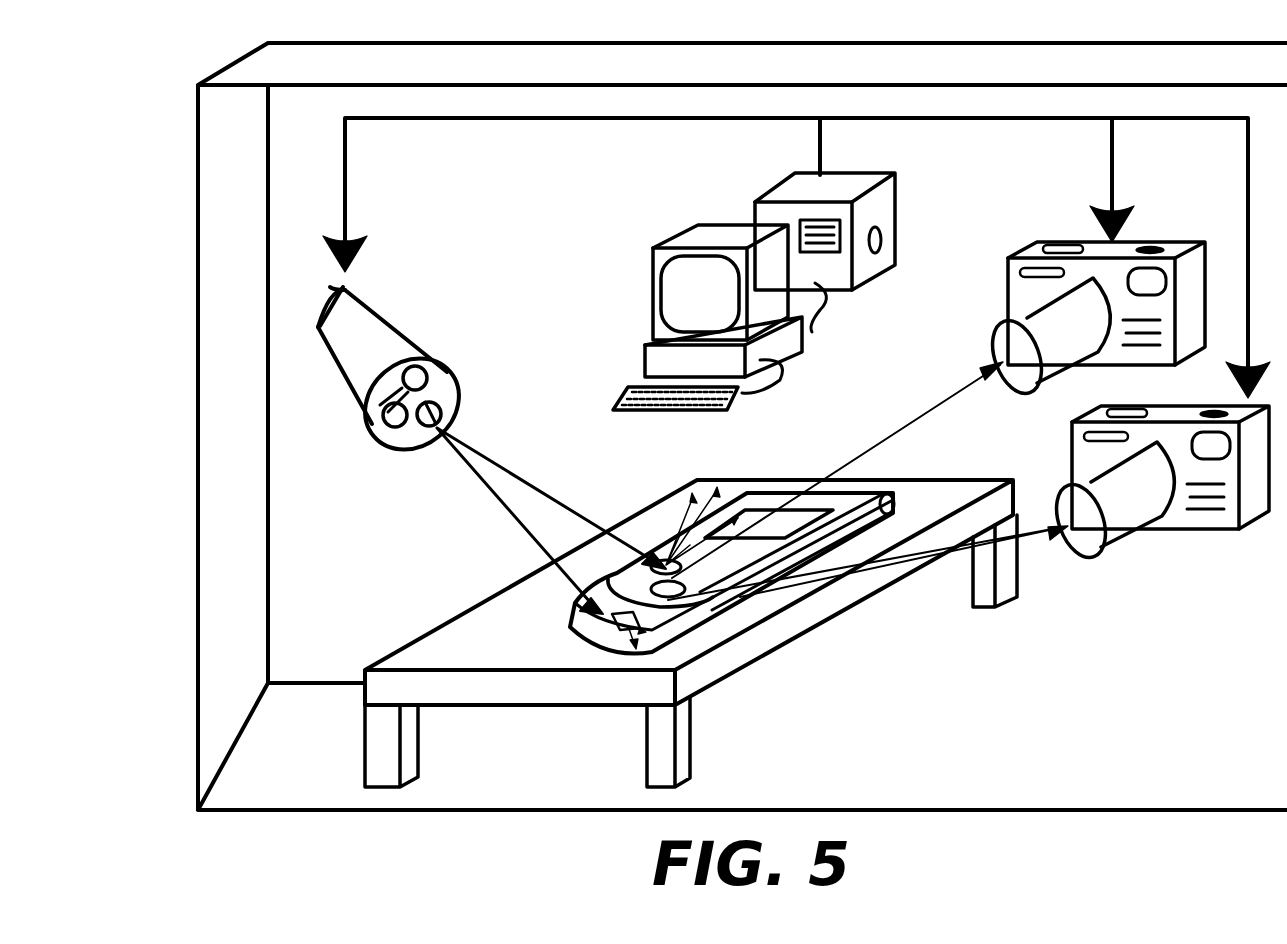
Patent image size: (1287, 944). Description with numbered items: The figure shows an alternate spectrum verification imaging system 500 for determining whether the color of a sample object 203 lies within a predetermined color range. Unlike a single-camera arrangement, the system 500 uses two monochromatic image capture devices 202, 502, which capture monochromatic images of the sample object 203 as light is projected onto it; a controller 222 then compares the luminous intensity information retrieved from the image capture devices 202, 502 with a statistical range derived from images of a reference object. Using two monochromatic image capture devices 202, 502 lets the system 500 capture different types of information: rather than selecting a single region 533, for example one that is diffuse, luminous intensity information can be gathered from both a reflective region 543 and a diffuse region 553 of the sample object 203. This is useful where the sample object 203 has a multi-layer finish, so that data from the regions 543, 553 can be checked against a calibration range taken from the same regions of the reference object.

The system 500 is at (514, 254).
The controller 222 is at (718, 238).
The monochromatic image capture device 202 is at (1040, 242).
The monochromatic image capture device 502 is at (1173, 527).
The sample object 203 is at (788, 526).
The reflective region 543 is at (673, 547).
The diffuse region 553 is at (618, 627).
The region 533 is at (695, 590).